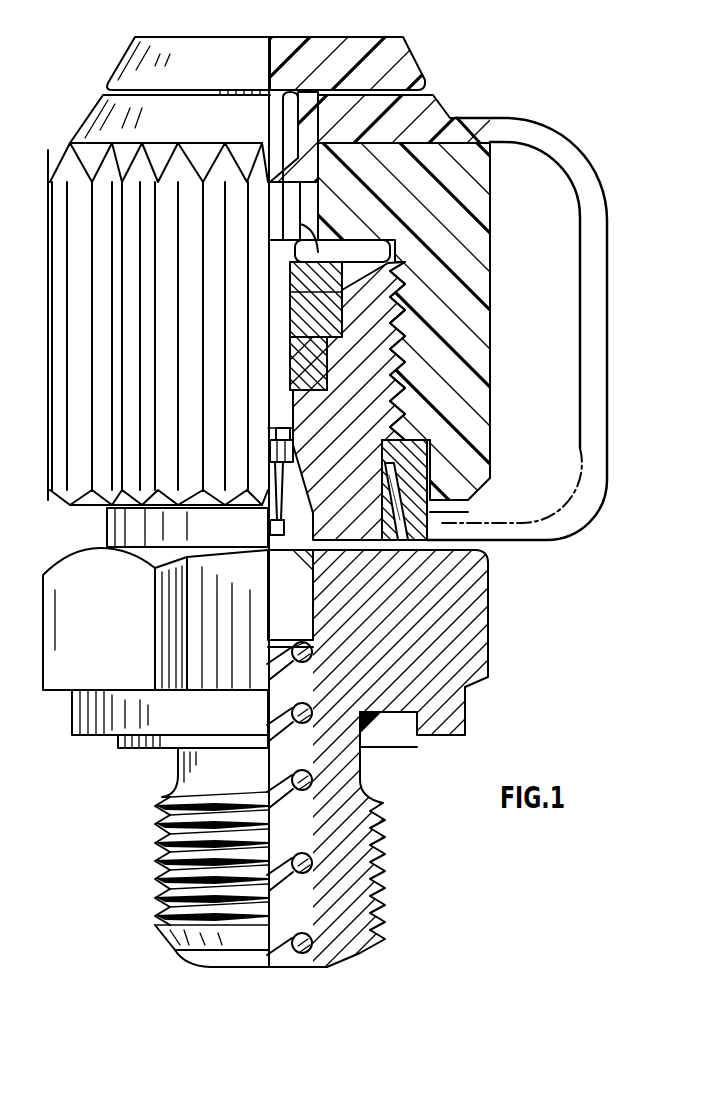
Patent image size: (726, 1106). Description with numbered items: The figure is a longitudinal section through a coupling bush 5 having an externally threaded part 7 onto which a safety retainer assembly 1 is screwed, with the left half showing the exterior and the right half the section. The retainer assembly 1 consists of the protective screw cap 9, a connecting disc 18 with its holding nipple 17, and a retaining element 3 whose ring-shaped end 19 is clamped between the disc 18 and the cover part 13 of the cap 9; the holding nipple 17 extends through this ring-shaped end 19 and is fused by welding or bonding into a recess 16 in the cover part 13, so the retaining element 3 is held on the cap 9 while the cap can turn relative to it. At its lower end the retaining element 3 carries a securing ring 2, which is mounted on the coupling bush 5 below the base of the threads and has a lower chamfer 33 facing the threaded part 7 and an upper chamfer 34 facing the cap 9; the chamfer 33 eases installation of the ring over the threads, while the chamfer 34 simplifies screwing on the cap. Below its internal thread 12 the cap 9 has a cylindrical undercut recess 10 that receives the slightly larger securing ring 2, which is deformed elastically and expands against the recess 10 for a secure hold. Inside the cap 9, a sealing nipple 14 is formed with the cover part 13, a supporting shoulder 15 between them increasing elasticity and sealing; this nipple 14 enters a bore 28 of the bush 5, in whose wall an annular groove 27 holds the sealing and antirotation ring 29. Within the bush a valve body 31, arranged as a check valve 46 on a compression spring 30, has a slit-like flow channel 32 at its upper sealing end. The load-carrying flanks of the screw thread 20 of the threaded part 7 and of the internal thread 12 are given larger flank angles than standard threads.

The safety retainer assembly 1 is at (507, 86).
The securing ring 2 is at (440, 512).
The retaining element 3 is at (590, 303).
The coupling bush 5 is at (472, 592).
The externally threaded part 7 is at (348, 418).
The protective screw cap 9 is at (440, 173).
The cylindrical undercut recess 10 is at (430, 467).
The internal thread 12 is at (403, 263).
The cover part 13 is at (297, 150).
The sealing nipple 14 is at (300, 325).
The supporting shoulder 15 is at (318, 230).
The recess 16 is at (323, 150).
The holding nipple 17 is at (310, 110).
The connecting disc 18 is at (313, 65).
The ring-shaped end 19 is at (397, 110).
The screw thread 20 is at (403, 320).
The annular groove 27 is at (345, 357).
The bore 28 is at (290, 292).
The sealing and antirotation ring 29 is at (265, 350).
The compression spring 30 is at (300, 880).
The valve body 31 is at (300, 605).
The flow channel 32 is at (268, 428).
The lower chamfer 33 is at (470, 540).
The upper chamfer 34 is at (440, 432).
The check valve 46 is at (260, 513).